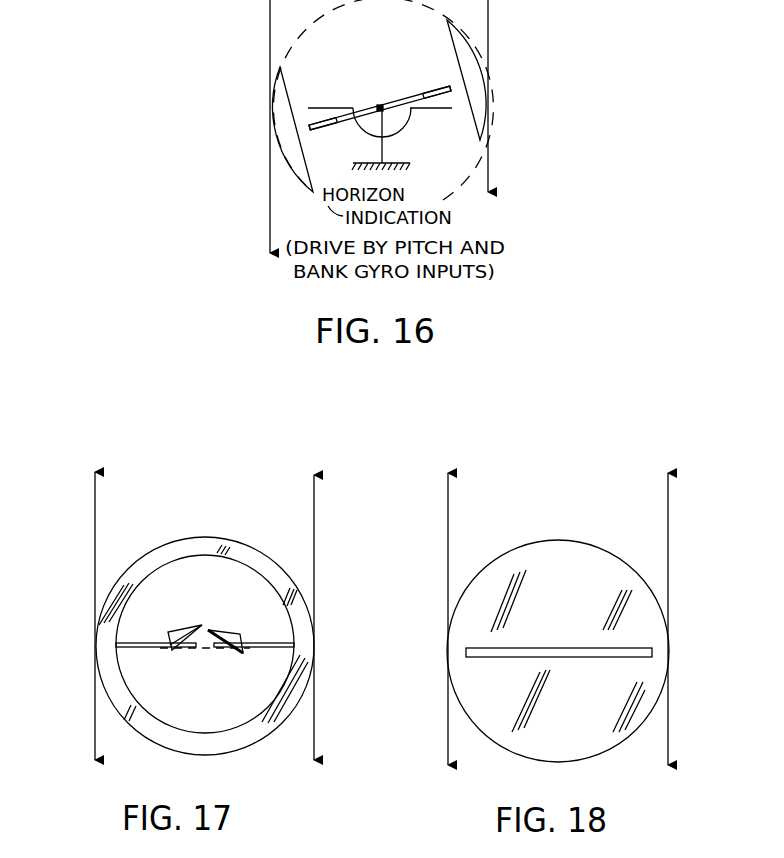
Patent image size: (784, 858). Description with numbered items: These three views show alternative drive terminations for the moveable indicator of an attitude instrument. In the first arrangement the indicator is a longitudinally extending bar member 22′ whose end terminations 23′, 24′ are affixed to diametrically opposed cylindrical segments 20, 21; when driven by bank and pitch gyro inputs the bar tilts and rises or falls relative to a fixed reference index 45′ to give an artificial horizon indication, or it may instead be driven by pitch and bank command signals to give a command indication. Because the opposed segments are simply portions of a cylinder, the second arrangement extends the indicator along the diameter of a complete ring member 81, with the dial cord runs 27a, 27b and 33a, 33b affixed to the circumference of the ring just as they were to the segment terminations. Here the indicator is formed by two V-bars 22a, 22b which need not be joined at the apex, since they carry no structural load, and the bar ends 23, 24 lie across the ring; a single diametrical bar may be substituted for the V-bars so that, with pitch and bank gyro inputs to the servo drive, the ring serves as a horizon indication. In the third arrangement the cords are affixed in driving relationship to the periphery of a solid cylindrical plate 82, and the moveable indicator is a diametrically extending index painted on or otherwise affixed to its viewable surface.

In FIG. 16, the cylindrical segment 20 is at (283, 88).
In FIG. 16, the cylindrical segment 21 is at (462, 35).
In FIG. 16, the bar member 22′ is at (383, 101).
In FIG. 17, the bar member 22′ is at (195, 650).
In FIG. 16, the end termination 23′ is at (305, 127).
In FIG. 16, the end termination 24′ is at (457, 93).
In FIG. 16, the fixed reference index 45′ is at (413, 112).
In FIG. 16, the dial cord 27a is at (270, 22).
In FIG. 17, the dial cord 27a is at (95, 540).
In FIG. 18, the dial cord 27a is at (448, 556).
In FIG. 16, the dial cord 27b is at (270, 190).
In FIG. 17, the dial cord 27b is at (95, 718).
In FIG. 18, the dial cord 27b is at (448, 735).
In FIG. 17, the dial cord 33a is at (314, 545).
In FIG. 18, the dial cord 33a is at (668, 548).
In FIG. 16, the dial cord 33b is at (488, 138).
In FIG. 17, the dial cord 33b is at (314, 705).
In FIG. 18, the dial cord 33b is at (668, 710).
In FIG. 17, the ring member 81 is at (200, 540).
In FIG. 18, the cylindrical plate 82 is at (567, 550).
In FIG. 17, the V-bar 22a is at (181, 630).
In FIG. 17, the V-bar 22b is at (228, 632).
In FIG. 17, the left horizon bar segment 23 is at (133, 650).
In FIG. 17, the right horizon bar segment 24 is at (251, 651).